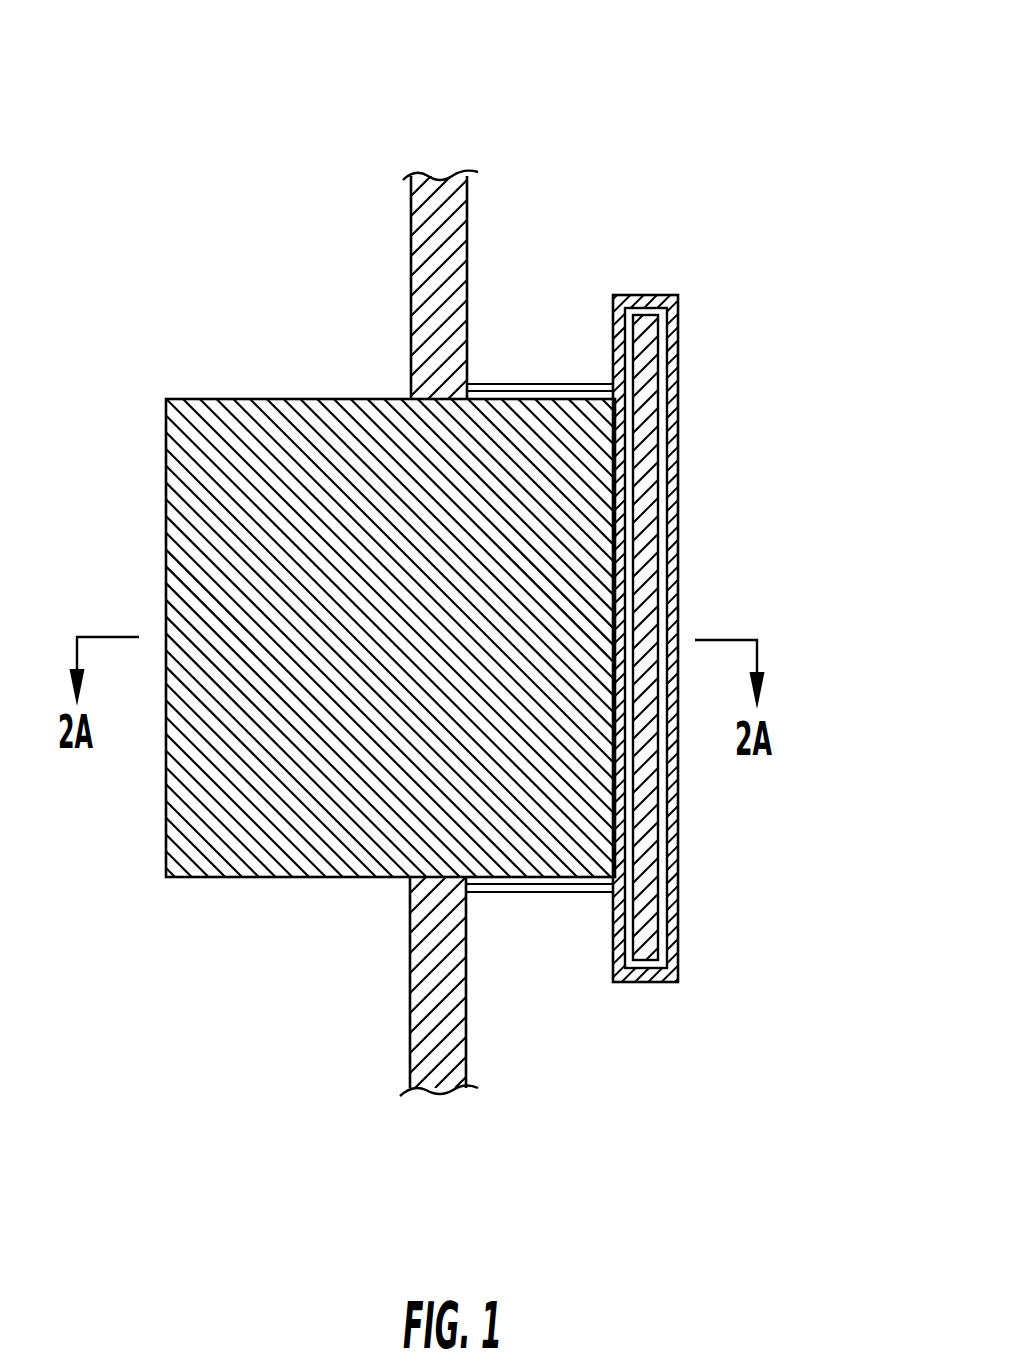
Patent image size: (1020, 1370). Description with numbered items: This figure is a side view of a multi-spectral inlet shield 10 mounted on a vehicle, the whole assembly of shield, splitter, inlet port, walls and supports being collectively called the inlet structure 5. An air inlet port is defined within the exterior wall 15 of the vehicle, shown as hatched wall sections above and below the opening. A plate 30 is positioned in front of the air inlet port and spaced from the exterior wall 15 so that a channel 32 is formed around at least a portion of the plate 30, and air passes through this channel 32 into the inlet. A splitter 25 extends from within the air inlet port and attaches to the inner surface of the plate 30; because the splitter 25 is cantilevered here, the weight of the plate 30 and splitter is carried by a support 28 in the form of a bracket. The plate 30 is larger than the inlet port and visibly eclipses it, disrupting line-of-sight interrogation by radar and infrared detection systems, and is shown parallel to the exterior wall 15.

The inlet structure 5 is at (510, 668).
The multi-spectral inlet shield 10 is at (510, 596).
The exterior wall 15 is at (433, 175).
The splitter 25 is at (262, 398).
The support 28 is at (482, 889).
The plate 30 is at (668, 555).
The channel 32 is at (538, 343).